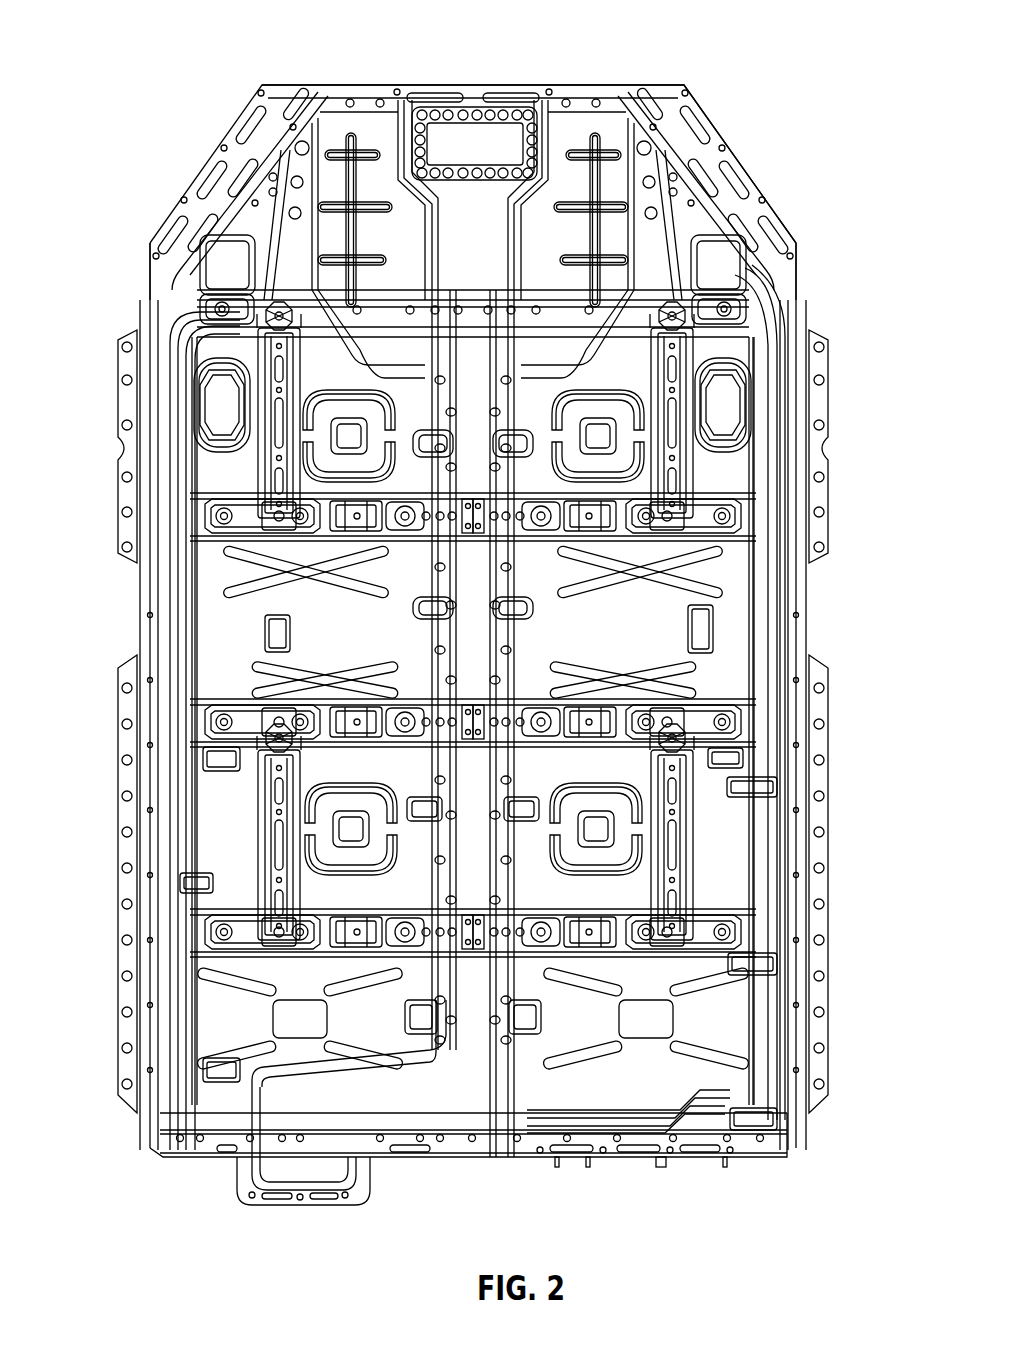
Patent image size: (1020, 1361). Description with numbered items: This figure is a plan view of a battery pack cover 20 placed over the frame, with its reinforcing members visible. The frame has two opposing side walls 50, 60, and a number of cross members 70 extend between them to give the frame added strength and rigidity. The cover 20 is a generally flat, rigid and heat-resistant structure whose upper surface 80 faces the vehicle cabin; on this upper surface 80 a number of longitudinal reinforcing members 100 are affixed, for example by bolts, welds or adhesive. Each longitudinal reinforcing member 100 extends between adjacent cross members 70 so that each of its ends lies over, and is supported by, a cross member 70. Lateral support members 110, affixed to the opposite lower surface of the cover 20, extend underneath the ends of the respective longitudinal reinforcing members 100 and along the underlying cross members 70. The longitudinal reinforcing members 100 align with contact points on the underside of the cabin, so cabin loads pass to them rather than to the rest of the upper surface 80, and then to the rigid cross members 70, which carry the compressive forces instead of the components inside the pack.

The cover 20 is at (560, 85).
The side wall 50 is at (806, 606).
The side wall 60 is at (155, 602).
The cross member 70 is at (585, 330).
The upper surface 80 is at (352, 647).
The longitudinal reinforcing member 100 is at (655, 392).
The lateral support member 110 is at (228, 313).